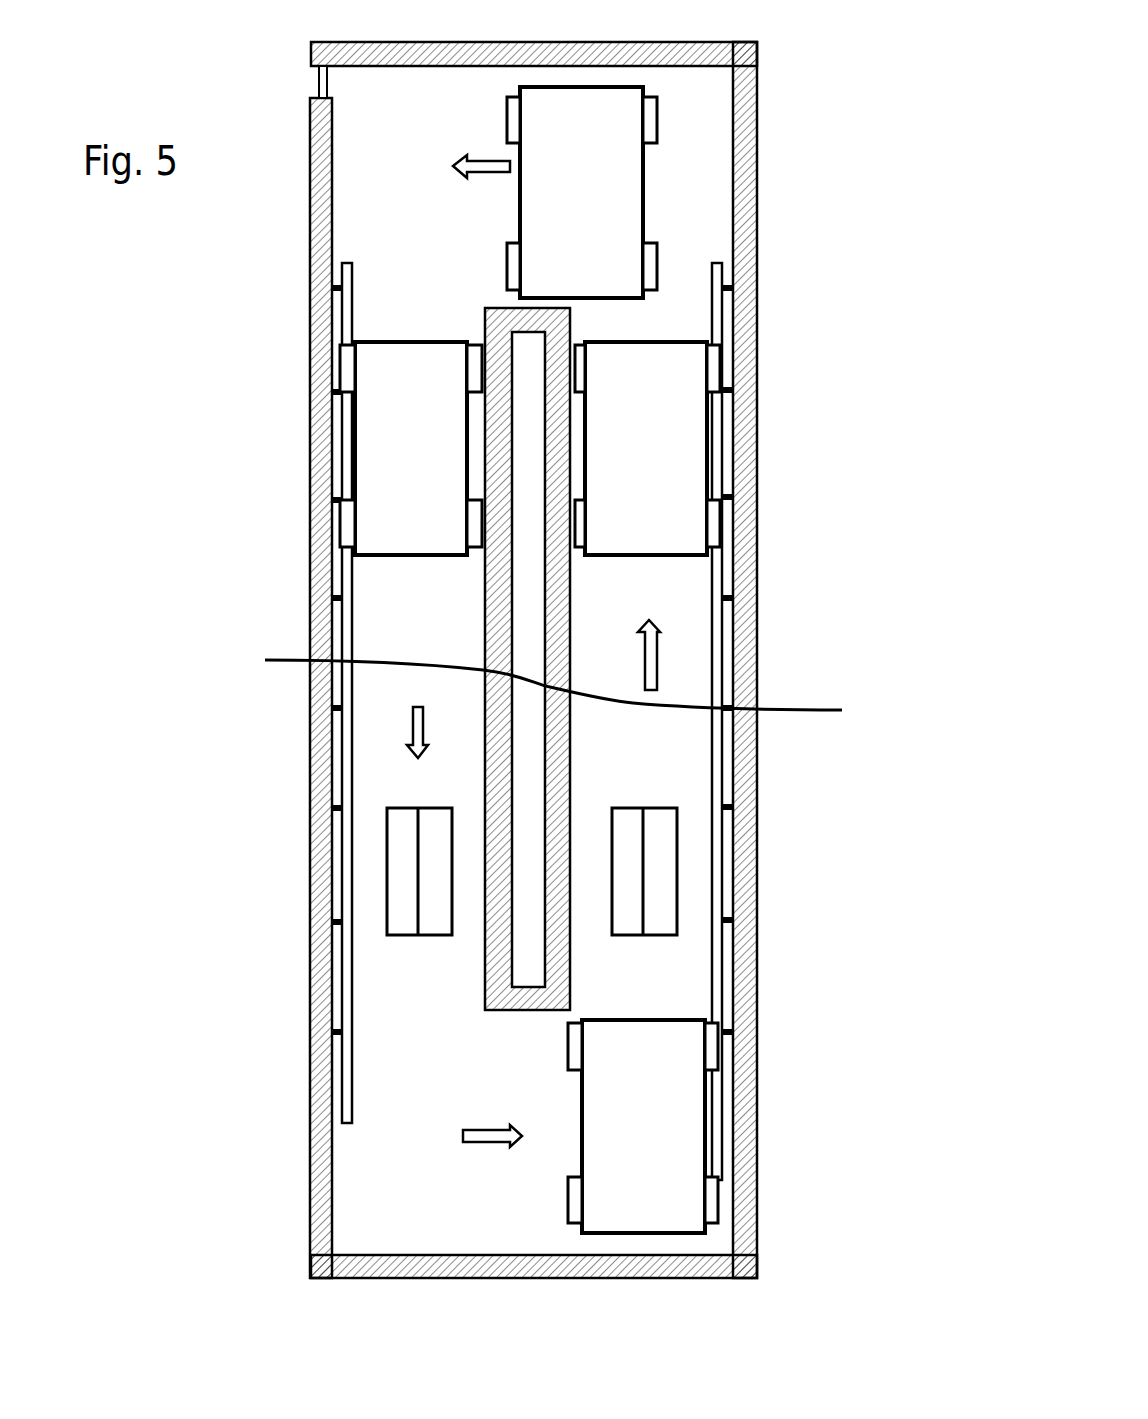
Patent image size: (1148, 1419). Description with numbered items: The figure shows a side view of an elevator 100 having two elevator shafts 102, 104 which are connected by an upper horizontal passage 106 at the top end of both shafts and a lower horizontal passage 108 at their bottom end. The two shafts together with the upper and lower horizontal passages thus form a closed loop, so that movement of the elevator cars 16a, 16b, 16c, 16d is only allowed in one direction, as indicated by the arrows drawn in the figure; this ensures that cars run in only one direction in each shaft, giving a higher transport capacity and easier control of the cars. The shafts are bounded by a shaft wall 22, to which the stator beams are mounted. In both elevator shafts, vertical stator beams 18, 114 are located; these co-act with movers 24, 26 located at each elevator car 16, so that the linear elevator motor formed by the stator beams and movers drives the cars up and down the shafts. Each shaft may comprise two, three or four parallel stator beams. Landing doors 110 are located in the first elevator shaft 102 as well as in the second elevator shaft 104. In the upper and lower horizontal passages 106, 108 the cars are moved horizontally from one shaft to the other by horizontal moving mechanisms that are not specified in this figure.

The elevator 100 is at (278, 121).
The elevator car 16 is at (293, 658).
The elevator car 16a is at (587, 158).
The elevator car 16b is at (645, 433).
The elevator car 16c is at (648, 1120).
The elevator car 16d is at (387, 433).
The stator beam 18 is at (533, 721).
The stator beam 114 is at (347, 778).
The shaft wall 22 is at (745, 622).
The mover 24 is at (507, 262).
The mover 26 is at (512, 110).
The elevator shaft 102 is at (420, 607).
The elevator shaft 104 is at (678, 597).
The upper horizontal passage 106 is at (447, 120).
The lower horizontal passage 108 is at (488, 1177).
The landing door 110 is at (408, 888).